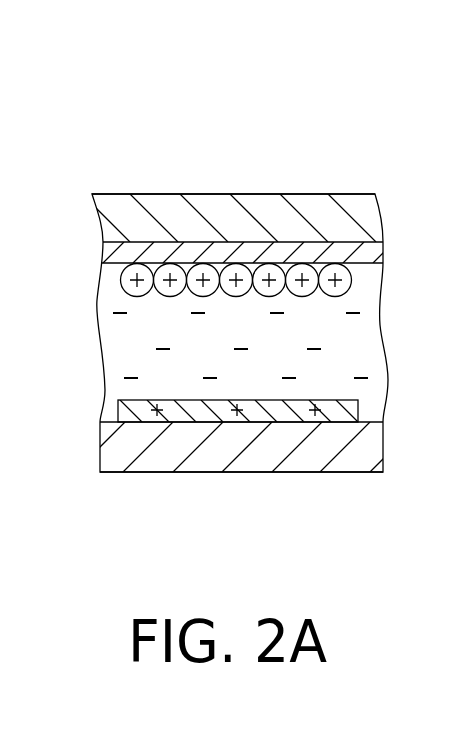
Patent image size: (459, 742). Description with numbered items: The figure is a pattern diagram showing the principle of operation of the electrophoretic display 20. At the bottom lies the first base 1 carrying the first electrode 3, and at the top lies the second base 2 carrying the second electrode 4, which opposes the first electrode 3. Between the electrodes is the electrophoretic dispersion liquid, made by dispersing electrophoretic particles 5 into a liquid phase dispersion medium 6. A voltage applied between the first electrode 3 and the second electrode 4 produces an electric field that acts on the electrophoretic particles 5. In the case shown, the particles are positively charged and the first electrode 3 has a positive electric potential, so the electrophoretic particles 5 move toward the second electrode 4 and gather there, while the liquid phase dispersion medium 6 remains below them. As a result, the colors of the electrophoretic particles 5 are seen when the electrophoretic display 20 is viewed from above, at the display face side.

The electrophoretic display 20 is at (312, 138).
The second base 2 is at (347, 213).
The second electrode 4 is at (152, 253).
The electrophoretic particles 5 is at (120, 275).
The liquid phase dispersion medium 6 is at (127, 338).
The first electrode 3 is at (195, 412).
The first base 1 is at (297, 445).